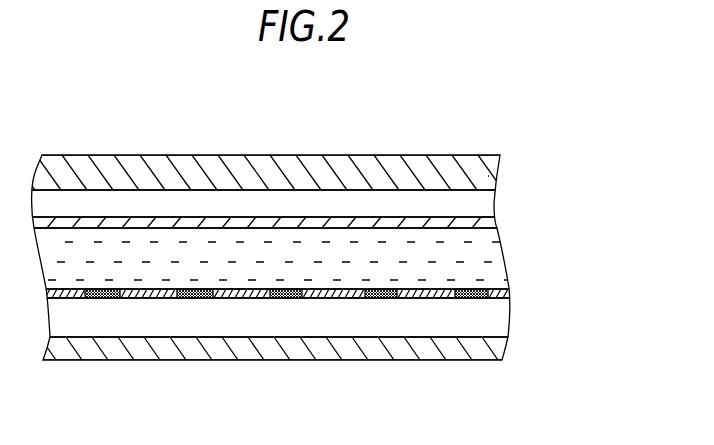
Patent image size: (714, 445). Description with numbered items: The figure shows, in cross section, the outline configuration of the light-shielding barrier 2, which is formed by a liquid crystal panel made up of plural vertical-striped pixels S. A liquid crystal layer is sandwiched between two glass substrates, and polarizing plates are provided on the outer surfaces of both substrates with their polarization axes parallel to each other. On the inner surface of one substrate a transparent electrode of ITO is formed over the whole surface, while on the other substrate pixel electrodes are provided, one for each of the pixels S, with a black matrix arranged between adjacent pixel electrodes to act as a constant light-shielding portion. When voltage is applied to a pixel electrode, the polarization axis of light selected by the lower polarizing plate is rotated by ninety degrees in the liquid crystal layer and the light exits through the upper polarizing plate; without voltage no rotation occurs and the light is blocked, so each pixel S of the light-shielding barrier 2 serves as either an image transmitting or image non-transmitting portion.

The light-shielding barrier 2 is at (480, 118).
The pixel S is at (148, 270).